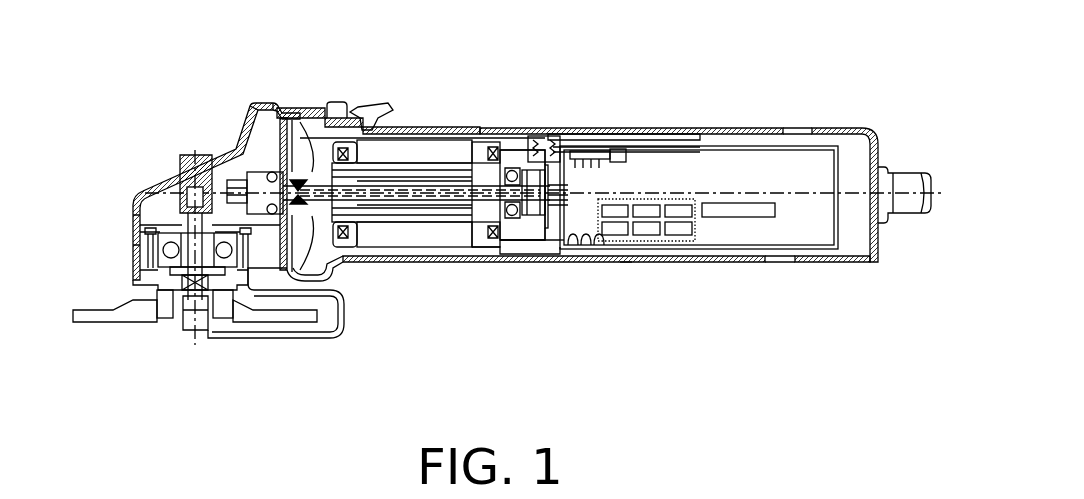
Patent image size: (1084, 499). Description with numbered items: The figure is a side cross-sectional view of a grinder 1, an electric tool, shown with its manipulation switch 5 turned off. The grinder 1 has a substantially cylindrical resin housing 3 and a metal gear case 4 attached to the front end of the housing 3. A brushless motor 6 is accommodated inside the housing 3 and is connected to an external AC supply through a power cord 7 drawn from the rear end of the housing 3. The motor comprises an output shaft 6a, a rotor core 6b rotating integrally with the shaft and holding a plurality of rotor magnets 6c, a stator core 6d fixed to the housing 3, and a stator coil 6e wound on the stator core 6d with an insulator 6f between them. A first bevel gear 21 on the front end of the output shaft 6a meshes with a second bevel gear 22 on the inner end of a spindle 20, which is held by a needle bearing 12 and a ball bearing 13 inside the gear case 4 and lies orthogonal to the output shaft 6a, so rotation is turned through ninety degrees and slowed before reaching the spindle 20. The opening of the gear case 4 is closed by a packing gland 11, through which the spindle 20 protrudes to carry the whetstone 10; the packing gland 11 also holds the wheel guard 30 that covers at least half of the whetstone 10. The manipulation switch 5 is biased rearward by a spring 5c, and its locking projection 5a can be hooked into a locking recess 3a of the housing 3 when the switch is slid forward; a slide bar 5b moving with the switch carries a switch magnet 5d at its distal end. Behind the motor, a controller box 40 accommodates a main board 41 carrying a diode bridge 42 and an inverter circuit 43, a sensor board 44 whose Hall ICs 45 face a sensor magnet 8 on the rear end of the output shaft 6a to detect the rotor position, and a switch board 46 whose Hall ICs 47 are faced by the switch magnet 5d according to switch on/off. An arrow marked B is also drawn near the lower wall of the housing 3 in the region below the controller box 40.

The grinder 1 is at (760, 123).
The housing 3 is at (690, 127).
The locking recess 3a is at (318, 107).
The gear case 4 is at (180, 190).
The manipulation switch 5 is at (366, 108).
The locking projection 5a is at (335, 101).
The slide bar 5b is at (410, 126).
The spring 5c is at (530, 130).
The switch magnet 5d is at (599, 135).
The brushless motor 6 is at (433, 244).
The output shaft 6a is at (362, 200).
The rotor core 6b is at (383, 215).
The rotor magnets 6c is at (410, 208).
The stator core 6d is at (458, 243).
The stator coil 6e is at (480, 243).
The insulator 6f is at (497, 247).
The power cord 7 is at (903, 181).
The sensor magnet 8 is at (546, 160).
The whetstone 10 is at (97, 323).
The packing gland 11 is at (134, 247).
The needle bearing 12 is at (177, 183).
The ball bearing 13 is at (152, 284).
The spindle 20 is at (200, 160).
The first bevel gear 21 is at (250, 107).
The second bevel gear 22 is at (143, 192).
The wheel guard 30 is at (255, 338).
The controller box 40 is at (667, 147).
The main board 41 is at (690, 241).
The diode bridge 42 is at (722, 214).
The inverter circuit 43 is at (645, 238).
The sensor board 44 is at (568, 242).
The Hall ICs 45 is at (547, 213).
The switch board 46 is at (618, 150).
The Hall ICs 47 is at (582, 148).
The direction B is at (626, 266).